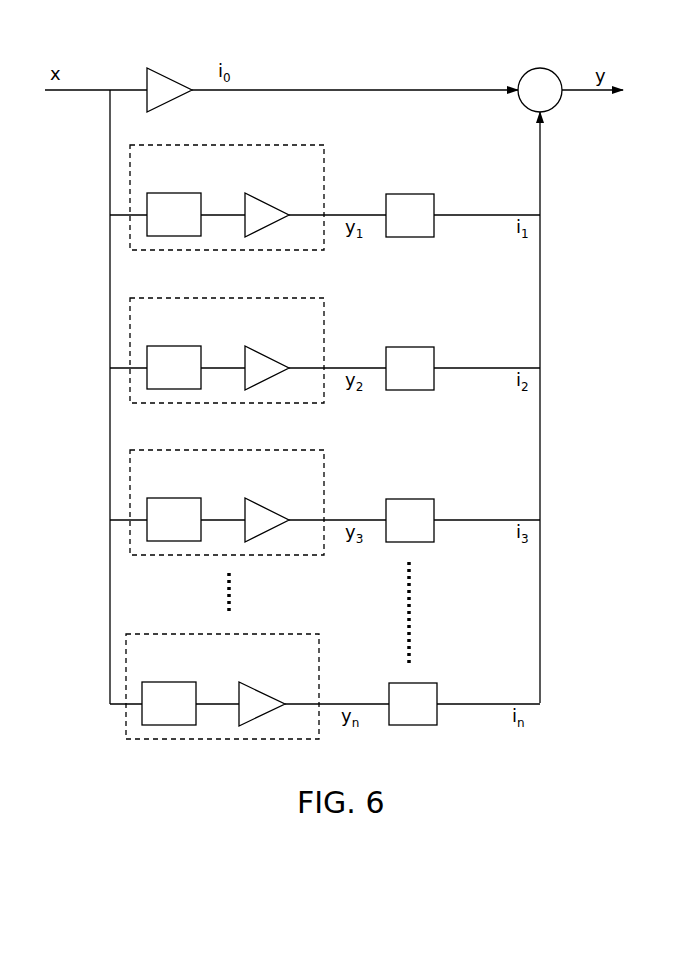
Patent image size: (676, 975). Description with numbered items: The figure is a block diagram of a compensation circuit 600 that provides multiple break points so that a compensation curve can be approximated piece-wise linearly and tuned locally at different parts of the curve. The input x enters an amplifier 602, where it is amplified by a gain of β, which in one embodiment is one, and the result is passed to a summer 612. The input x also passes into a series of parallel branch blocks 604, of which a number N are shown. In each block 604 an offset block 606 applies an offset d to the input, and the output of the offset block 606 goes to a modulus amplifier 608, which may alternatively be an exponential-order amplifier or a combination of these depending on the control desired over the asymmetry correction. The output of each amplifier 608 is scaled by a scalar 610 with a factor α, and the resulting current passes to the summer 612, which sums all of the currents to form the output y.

The adaptive filter / signal processing system 600 is at (553, 577).
The amplifier 602 is at (183, 76).
The block 604 is at (337, 150).
The offset block 606 is at (181, 191).
The modulus amplifier 608 is at (275, 194).
The scalar 610 is at (421, 192).
The summer 612 is at (556, 65).